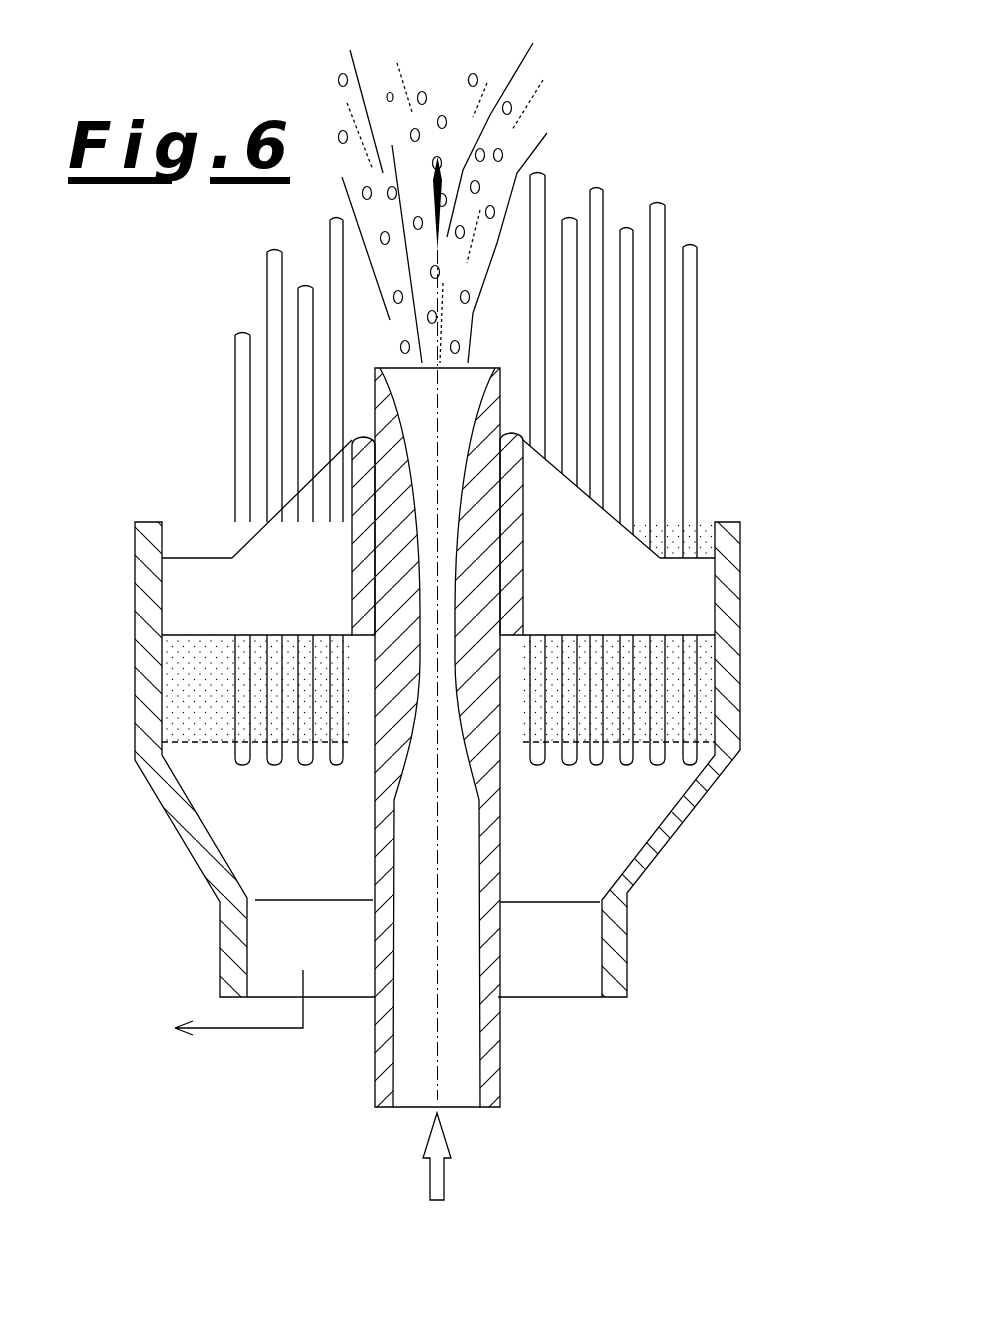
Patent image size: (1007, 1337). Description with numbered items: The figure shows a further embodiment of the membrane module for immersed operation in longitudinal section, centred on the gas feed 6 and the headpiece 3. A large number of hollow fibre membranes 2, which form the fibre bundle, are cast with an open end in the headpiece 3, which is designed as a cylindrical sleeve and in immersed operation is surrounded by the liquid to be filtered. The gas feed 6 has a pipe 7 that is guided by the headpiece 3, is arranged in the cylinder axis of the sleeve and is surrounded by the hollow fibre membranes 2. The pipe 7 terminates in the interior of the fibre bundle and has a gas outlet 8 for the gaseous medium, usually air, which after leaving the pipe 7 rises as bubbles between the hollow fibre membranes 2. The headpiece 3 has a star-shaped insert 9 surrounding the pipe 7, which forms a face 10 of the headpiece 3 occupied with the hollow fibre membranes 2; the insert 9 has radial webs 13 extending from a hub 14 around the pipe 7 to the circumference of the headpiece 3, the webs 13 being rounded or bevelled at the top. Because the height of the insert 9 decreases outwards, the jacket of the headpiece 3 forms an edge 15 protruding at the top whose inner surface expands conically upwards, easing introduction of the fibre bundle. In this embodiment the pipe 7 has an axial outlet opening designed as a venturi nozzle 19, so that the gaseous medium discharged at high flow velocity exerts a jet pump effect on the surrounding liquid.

The hollow fibre membranes 2 is at (690, 282).
The headpiece 3 is at (697, 905).
The gas feed 6 is at (447, 1180).
The pipe 7 is at (772, 267).
The gas outlet 8 is at (540, 117).
The star-shaped insert 9 is at (612, 655).
The face 10 is at (713, 510).
The radial webs 13 is at (227, 553).
The hub 14 is at (512, 558).
The edge 15 is at (753, 663).
The venturi nozzle 19 is at (427, 702).